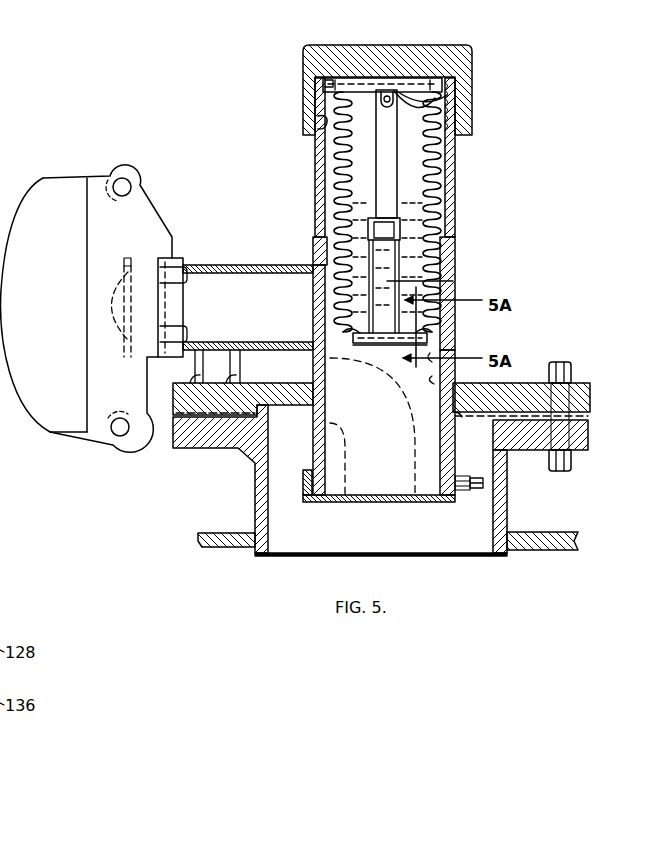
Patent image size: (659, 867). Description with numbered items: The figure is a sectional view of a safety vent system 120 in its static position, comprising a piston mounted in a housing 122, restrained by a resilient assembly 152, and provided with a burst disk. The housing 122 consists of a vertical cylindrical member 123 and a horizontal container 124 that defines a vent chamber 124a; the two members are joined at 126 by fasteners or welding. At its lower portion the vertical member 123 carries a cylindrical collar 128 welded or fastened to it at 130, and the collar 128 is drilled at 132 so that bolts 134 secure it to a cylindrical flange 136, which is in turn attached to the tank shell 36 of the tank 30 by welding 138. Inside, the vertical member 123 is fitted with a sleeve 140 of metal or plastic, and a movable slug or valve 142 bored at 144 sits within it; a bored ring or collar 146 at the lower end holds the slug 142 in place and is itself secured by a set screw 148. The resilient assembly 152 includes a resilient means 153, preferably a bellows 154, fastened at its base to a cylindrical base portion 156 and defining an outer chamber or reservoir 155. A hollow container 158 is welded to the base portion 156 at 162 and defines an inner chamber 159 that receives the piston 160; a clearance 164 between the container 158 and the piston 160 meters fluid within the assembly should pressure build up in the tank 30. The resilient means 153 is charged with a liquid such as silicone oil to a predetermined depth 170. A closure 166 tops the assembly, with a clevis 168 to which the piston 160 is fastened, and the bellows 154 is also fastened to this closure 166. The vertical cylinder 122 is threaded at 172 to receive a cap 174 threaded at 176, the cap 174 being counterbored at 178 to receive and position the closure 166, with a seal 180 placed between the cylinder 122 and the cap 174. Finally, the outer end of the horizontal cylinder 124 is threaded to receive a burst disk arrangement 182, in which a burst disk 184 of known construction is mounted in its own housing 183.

The tank 30 is at (380, 483).
The tank shell 36 is at (540, 533).
The safety vent system 120 is at (418, 184).
The housing 122 is at (395, 214).
The cylindrical member 123 is at (455, 220).
The container 124 is at (277, 263).
The vent chamber 124a is at (220, 290).
The joint 126 is at (310, 260).
The cylindrical collar 128 is at (554, 406).
The attachment point 130 is at (466, 412).
The drilled holes 132 is at (590, 395).
The bolts 134 is at (568, 365).
The cylindrical flange 136 is at (588, 438).
The welding 138 is at (525, 512).
The sleeve 140 is at (458, 411).
The movable slug or valve 142 is at (390, 508).
The bore 144 is at (343, 463).
The bored ring or collar 146 is at (427, 502).
The set screw 148 is at (470, 493).
The resilient assembly 152 is at (440, 167).
The resilient means 153 is at (333, 155).
The bellows 154 is at (447, 180).
The outer chamber or reservoir 155 is at (447, 147).
The cylindrical base portion 156 is at (383, 347).
The hollow container 158 is at (447, 248).
The inner chamber 159 is at (453, 281).
The piston 160 is at (375, 168).
The weld 162 is at (340, 323).
The clearance 164 is at (400, 218).
The closure 166 is at (470, 92).
The clevis 168 is at (397, 96).
The fluid depth 170 is at (348, 190).
The cylinder threads 172 is at (315, 128).
The cap 174 is at (470, 73).
The cap threads 176 is at (315, 100).
The counterbore 178 is at (371, 80).
The seal 180 is at (437, 80).
The burst disk arrangement 182 is at (86, 302).
The burst disk housing 183 is at (82, 437).
The burst disk 184 is at (100, 335).